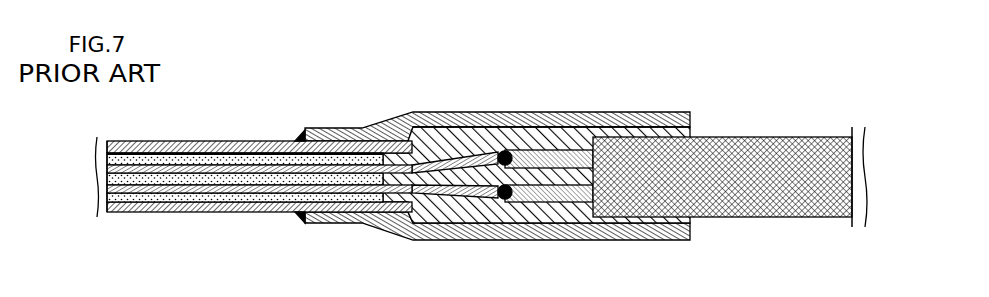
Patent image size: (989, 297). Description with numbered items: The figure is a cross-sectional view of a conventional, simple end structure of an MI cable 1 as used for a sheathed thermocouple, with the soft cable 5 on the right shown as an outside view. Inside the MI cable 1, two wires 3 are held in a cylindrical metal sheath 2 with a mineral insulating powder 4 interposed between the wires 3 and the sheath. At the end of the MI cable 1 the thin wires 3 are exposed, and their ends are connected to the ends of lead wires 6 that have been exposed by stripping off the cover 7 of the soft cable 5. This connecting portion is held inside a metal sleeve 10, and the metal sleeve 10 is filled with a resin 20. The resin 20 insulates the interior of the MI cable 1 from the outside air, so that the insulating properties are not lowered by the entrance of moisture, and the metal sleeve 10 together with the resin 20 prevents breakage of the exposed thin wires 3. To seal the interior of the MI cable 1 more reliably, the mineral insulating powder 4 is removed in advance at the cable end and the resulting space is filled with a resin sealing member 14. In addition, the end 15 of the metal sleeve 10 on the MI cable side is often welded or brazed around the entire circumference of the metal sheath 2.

The MI cable 1 is at (254, 148).
The metal sheath 2 is at (180, 140).
The wires 3 is at (232, 165).
The mineral insulating powder 4 is at (195, 193).
The soft cable 5 is at (586, 149).
The lead wires 6 is at (567, 117).
The cover 7 is at (752, 198).
The metal sleeve 10 is at (483, 113).
The resin sealing member 14 is at (446, 226).
The end of the metal sleeve 15 is at (300, 131).
The resin 20 is at (497, 228).